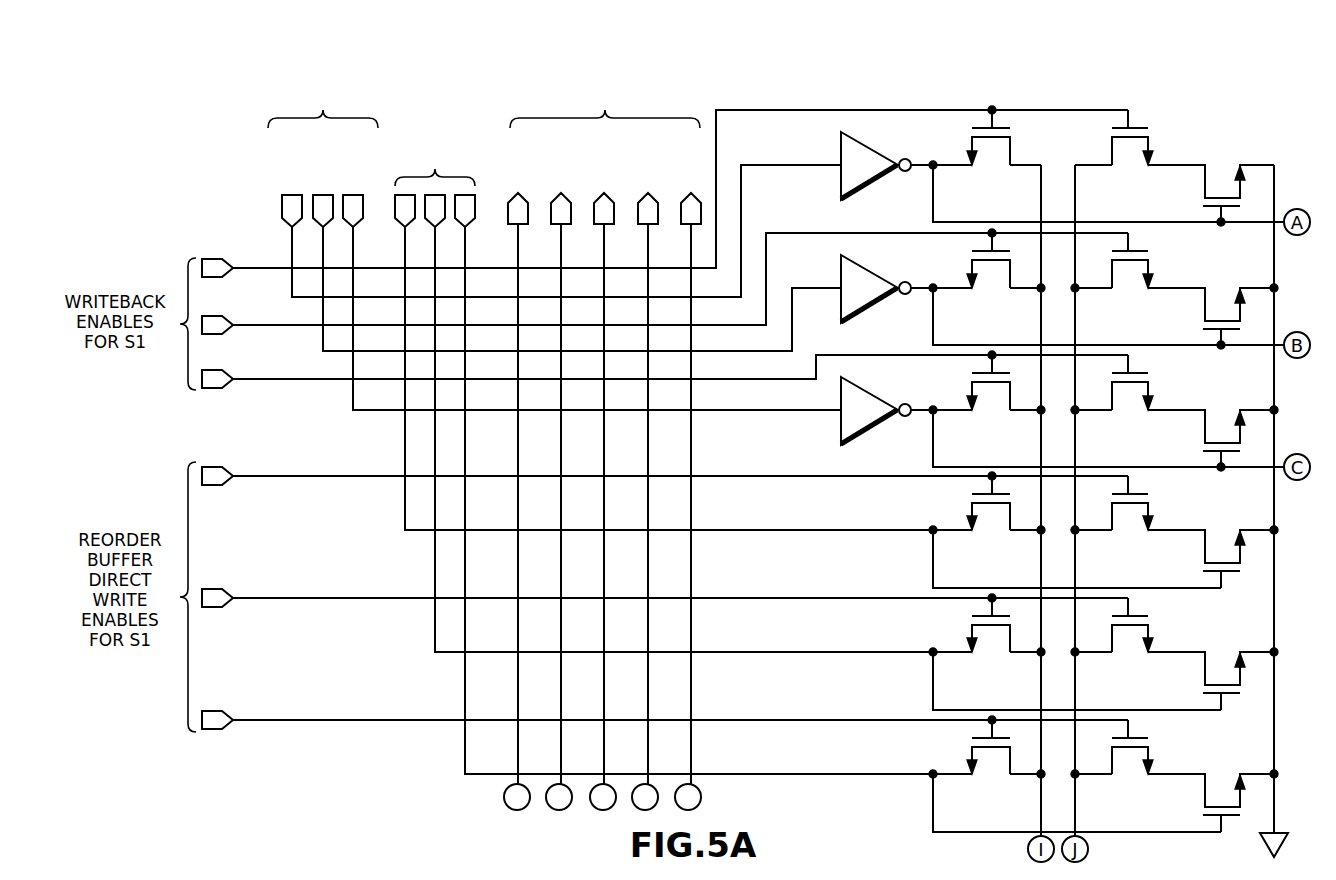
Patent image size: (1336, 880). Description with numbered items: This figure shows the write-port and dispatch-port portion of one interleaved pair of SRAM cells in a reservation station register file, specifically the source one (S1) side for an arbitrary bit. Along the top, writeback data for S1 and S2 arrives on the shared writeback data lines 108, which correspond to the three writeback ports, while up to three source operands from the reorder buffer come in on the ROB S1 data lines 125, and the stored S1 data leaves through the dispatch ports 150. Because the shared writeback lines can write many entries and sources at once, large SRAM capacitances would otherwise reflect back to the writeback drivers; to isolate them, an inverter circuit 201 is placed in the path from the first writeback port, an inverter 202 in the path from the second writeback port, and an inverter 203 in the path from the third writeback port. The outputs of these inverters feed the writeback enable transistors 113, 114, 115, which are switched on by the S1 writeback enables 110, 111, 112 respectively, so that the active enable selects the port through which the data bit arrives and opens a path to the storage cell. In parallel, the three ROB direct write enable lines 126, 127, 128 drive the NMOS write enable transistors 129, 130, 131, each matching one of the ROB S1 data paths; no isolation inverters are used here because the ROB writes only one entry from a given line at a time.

The shared writeback data lines 108 is at (262, 70).
The ROB S1 data lines 125 is at (438, 96).
The dispatch ports 150 is at (706, 72).
The S1 writeback enable 110 is at (228, 266).
The S1 writeback enable 111 is at (231, 323).
The S1 writeback enable 112 is at (213, 390).
The ROB direct write enable line 126 is at (213, 486).
The ROB direct write enable line 127 is at (213, 608).
The ROB direct write enable line 128 is at (213, 730).
The inverter circuit 201 is at (849, 175).
The inverter 202 is at (849, 298).
The inverter 203 is at (849, 420).
The writeback enable transistor 113 is at (968, 152).
The writeback enable transistor 114 is at (968, 275).
The writeback enable transistor 115 is at (968, 397).
The NMOS write enable transistor 129 is at (968, 518).
The NMOS write enable transistor 130 is at (968, 640).
The NMOS write enable transistor 131 is at (968, 762).